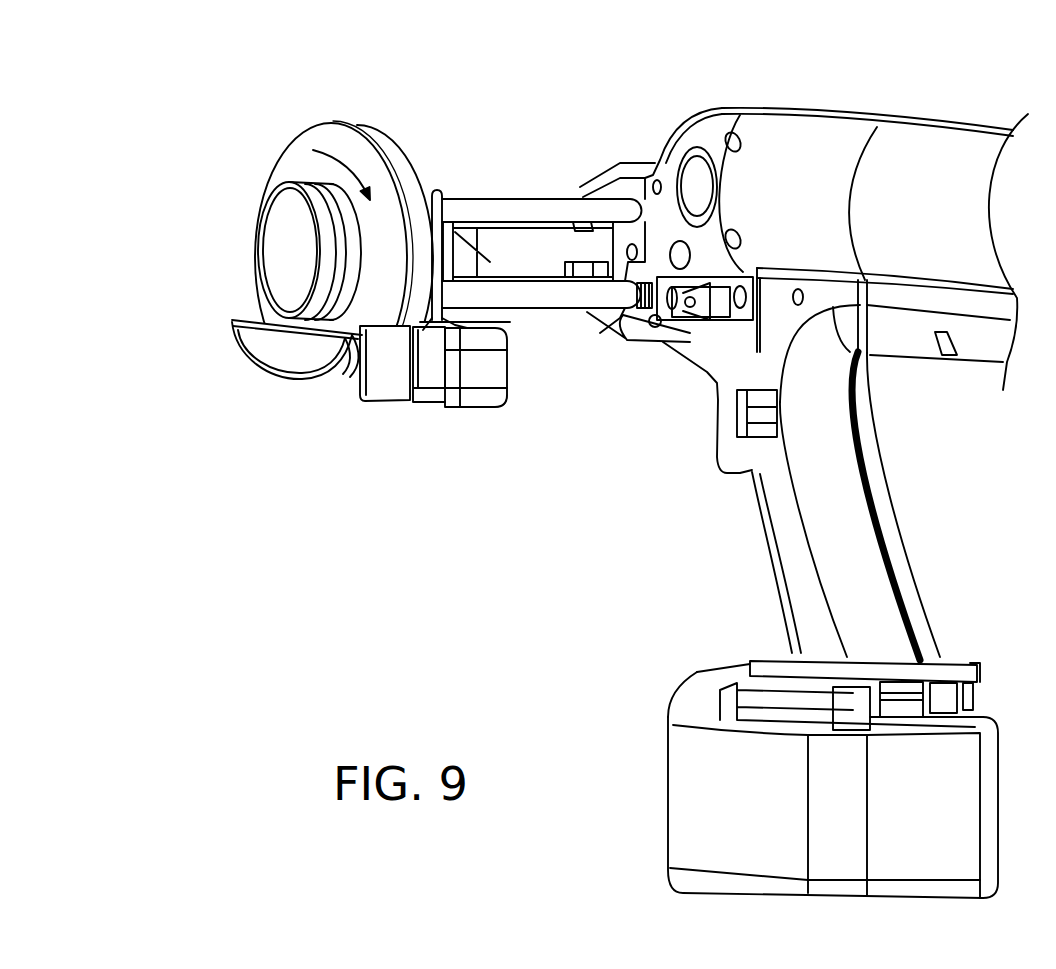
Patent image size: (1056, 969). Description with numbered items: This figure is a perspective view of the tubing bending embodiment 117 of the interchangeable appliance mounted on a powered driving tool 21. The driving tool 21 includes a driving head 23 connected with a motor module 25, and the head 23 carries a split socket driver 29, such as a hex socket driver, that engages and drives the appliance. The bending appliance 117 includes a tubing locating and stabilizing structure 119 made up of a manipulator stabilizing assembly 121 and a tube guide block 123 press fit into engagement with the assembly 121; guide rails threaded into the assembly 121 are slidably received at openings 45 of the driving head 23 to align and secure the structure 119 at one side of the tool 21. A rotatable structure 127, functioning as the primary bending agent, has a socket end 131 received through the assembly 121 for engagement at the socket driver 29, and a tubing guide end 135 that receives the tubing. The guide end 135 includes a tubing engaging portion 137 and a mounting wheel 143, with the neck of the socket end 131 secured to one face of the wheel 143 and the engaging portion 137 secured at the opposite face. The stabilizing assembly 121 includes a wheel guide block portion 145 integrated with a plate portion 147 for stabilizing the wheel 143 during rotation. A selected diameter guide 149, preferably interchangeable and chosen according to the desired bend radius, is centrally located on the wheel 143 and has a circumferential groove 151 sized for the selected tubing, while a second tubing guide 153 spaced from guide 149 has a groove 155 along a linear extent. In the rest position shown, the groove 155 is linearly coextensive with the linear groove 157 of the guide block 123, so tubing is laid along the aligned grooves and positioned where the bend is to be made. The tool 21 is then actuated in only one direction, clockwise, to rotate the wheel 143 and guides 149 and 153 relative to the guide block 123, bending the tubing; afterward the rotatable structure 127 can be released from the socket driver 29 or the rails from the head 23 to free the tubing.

The powered driving tool 21 is at (859, 105).
The driving head 23 is at (707, 130).
The motor module 25 is at (933, 140).
The split socket driver 29 is at (580, 262).
The openings 45 is at (643, 197).
The tubing bending embodiment 117 is at (470, 133).
The tubing locating and stabilizing structure 119 is at (495, 404).
The manipulator stabilizing assembly 121 is at (497, 373).
The tube guide block 123 is at (425, 397).
The rotatable structure 127 is at (340, 122).
The socket end 131 is at (477, 230).
The tubing guide end 135 is at (255, 255).
The tubing engaging portion 137 is at (231, 314).
The mounting wheel 143 is at (283, 168).
The wheel guide block portion 145 is at (503, 403).
The plate portion 147 is at (433, 196).
The selected diameter guide 149 is at (290, 263).
The circumferential groove 151 is at (310, 180).
The second tubing guide 153 is at (280, 365).
The groove 155 is at (323, 383).
The linear groove 157 is at (432, 335).